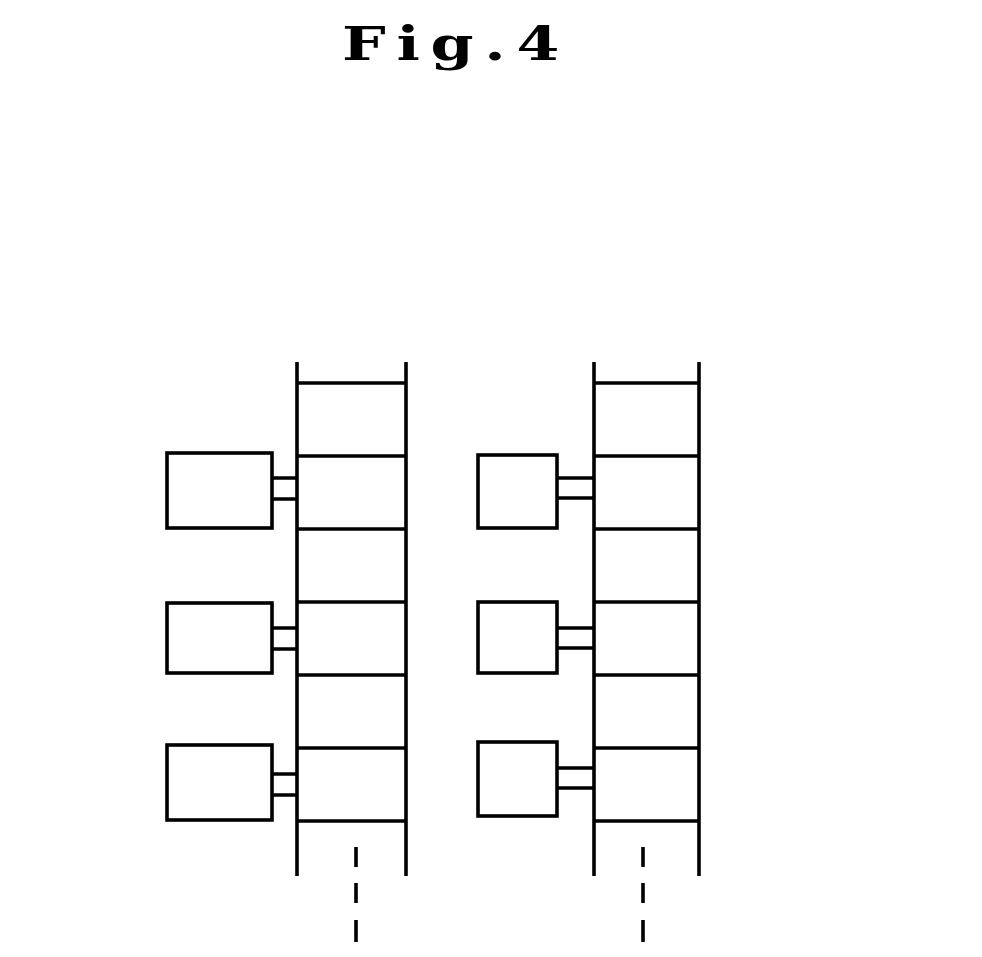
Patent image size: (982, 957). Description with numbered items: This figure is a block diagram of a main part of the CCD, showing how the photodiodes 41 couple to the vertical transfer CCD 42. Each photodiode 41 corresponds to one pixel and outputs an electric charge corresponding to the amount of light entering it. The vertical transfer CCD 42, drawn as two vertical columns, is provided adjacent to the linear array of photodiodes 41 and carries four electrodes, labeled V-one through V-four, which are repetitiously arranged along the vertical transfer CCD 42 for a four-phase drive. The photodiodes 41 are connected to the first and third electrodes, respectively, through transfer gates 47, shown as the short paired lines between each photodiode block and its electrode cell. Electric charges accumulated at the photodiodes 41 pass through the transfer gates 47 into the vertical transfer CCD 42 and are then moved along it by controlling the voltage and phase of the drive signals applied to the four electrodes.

The photodiode 41 is at (167, 783).
The vertical transfer CCD 42 is at (406, 372).
The transfer gate 47 is at (288, 476).